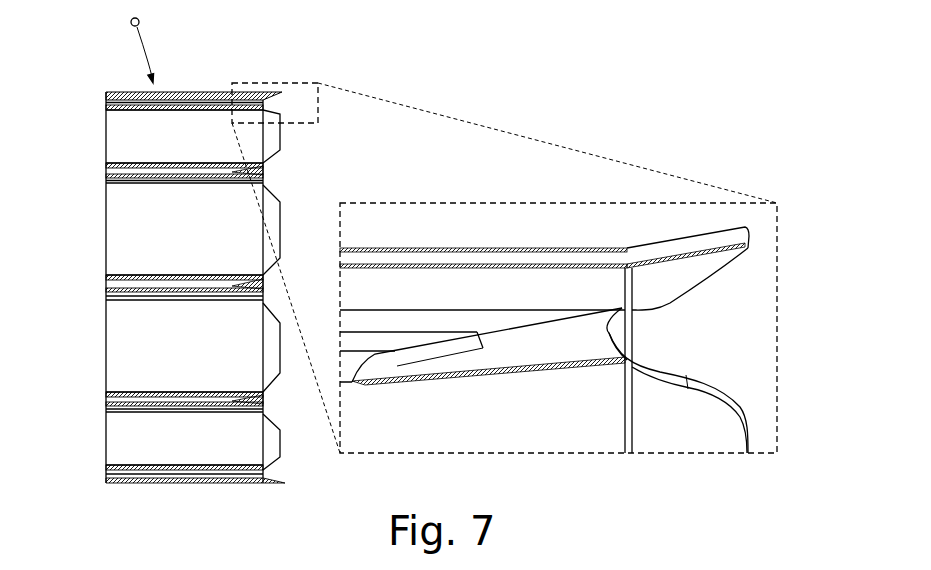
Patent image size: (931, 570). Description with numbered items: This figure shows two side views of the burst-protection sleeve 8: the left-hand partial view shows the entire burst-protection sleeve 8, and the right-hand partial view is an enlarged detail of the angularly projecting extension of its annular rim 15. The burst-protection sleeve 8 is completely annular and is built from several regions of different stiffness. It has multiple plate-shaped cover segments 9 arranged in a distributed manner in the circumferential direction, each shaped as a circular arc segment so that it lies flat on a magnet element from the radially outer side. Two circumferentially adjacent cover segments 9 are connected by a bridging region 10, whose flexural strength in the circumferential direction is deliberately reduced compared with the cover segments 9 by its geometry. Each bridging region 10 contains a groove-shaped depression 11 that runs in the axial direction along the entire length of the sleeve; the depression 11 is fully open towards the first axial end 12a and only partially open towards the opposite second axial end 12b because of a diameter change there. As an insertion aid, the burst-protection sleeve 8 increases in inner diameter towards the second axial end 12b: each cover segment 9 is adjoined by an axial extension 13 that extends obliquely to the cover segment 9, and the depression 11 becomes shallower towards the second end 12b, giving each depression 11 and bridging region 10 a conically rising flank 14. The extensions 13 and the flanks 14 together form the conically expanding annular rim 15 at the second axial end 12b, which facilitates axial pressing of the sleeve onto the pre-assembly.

The burst-protection sleeve 8 is at (546, 244).
The cover segment 9 is at (122, 138).
The bridging region 10 is at (122, 178).
The groove-shaped depression 11 is at (489, 406).
The first axial end 12a is at (100, 88).
The second axial end 12b is at (292, 171).
The axial extension 13 is at (270, 137).
The conically rising flank 14 is at (574, 346).
The conically expanding annular rim 15 is at (292, 463).